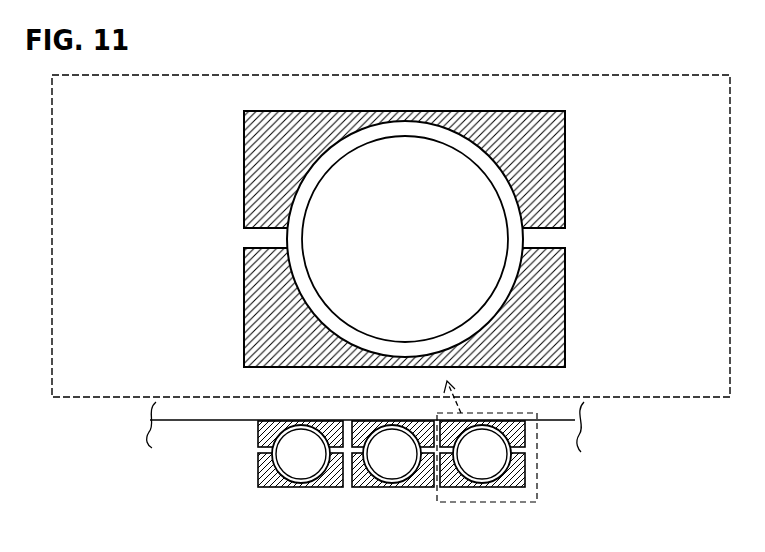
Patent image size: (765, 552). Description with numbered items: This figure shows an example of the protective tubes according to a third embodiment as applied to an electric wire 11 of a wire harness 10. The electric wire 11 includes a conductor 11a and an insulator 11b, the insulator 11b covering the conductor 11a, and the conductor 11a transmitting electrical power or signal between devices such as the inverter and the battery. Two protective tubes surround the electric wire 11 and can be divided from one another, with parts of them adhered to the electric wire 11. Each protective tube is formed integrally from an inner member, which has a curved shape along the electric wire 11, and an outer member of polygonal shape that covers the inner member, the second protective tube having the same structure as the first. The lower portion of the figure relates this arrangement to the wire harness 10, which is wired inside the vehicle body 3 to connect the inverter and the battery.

The electric wire 11 is at (499, 256).
The conductor 11a is at (652, 147).
The insulator 11b is at (542, 198).
The vehicle body 3 is at (235, 410).
The wire harness 10 is at (535, 481).